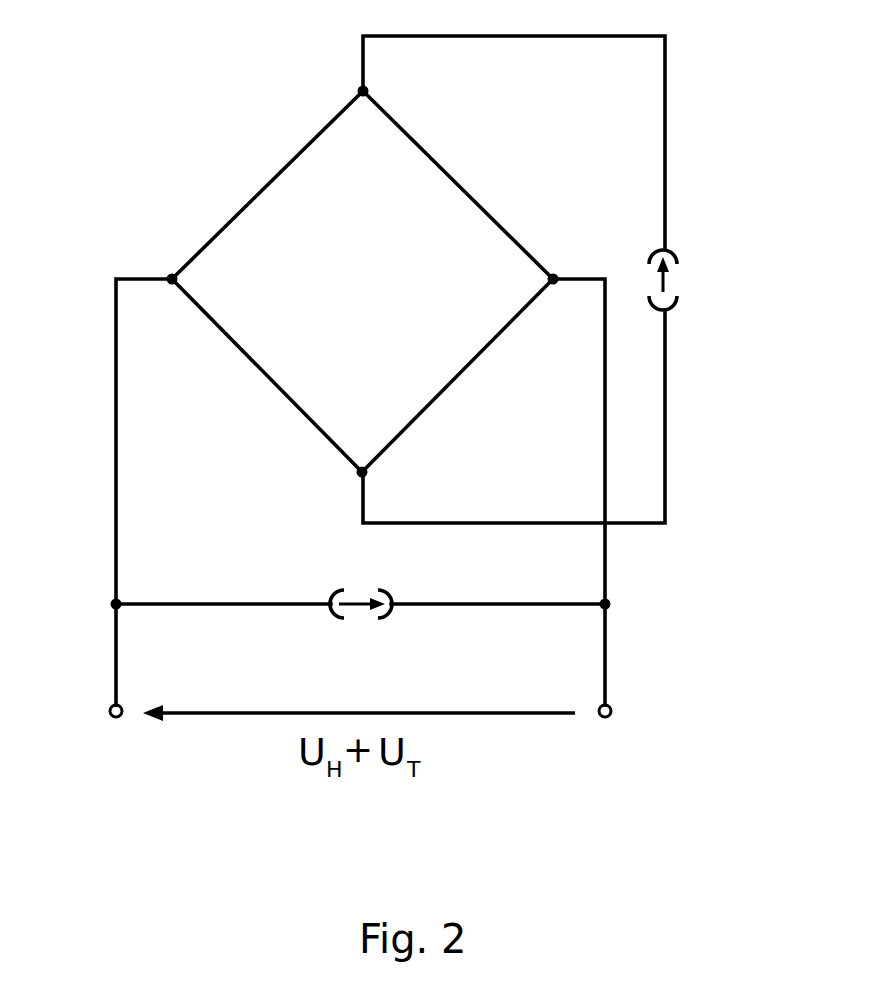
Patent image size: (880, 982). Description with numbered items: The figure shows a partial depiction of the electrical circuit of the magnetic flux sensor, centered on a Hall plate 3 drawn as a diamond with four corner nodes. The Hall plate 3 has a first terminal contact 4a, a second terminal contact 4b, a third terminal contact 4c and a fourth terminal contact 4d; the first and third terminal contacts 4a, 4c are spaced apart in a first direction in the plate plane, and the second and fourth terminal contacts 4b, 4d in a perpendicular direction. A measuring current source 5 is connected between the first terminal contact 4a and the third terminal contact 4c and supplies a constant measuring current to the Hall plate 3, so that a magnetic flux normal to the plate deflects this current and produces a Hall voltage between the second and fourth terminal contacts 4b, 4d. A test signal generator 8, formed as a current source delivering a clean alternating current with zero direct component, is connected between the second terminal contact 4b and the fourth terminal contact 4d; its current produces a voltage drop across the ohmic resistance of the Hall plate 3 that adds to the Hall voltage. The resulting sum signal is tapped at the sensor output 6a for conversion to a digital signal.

The Hall plate 3 is at (372, 303).
The first terminal contact 4a is at (360, 88).
The second terminal contact 4b is at (554, 276).
The third terminal contact 4c is at (366, 472).
The fourth terminal contact 4d is at (171, 276).
The measuring current source 5 is at (667, 305).
The sensor output 6a is at (119, 718).
The test signal generator 8 is at (343, 591).